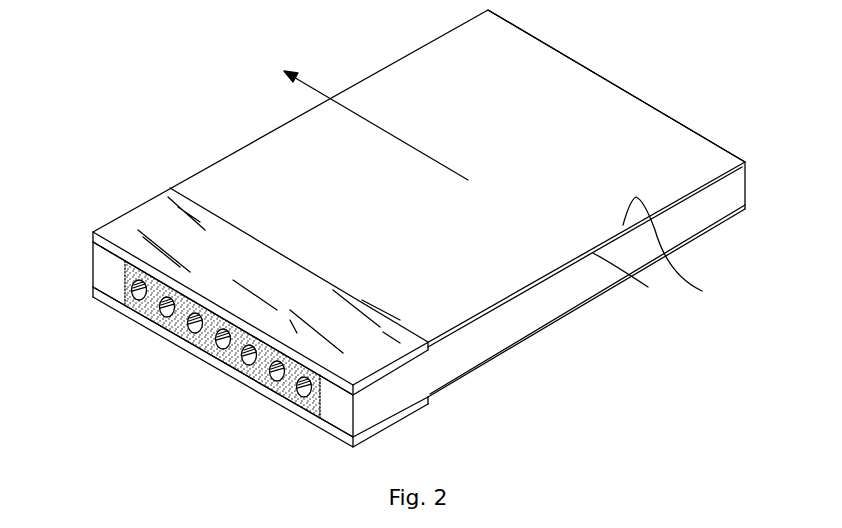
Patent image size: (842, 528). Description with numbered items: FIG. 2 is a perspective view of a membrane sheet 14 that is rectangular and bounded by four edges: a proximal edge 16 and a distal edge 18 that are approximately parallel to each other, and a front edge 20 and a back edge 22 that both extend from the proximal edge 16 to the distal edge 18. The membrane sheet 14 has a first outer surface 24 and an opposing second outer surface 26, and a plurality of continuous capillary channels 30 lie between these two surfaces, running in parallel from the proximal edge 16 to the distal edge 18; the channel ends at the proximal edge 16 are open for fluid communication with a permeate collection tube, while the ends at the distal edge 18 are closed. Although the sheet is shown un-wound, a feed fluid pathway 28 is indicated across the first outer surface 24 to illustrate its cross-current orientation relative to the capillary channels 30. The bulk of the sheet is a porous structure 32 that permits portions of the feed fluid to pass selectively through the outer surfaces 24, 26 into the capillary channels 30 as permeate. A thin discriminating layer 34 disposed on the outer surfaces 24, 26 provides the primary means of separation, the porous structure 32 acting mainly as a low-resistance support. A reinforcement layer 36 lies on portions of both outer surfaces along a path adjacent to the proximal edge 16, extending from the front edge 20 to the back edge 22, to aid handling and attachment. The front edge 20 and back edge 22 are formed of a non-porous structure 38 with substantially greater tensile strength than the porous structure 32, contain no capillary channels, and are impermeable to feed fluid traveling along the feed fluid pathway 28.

The membrane sheet 14 is at (212, 84).
The proximal edge 16 is at (145, 307).
The distal edge 18 is at (588, 67).
The front edge 20 is at (560, 298).
The back edge 22 is at (293, 121).
The first outer surface 24 is at (675, 249).
The second outer surface 26 is at (526, 341).
The feed fluid pathway 28 is at (317, 88).
The capillary channels 30 is at (190, 334).
The porous structure 32 is at (180, 317).
The discriminating layer 34 is at (746, 171).
The reinforcement layer 36 is at (108, 220).
The non-porous structure 38 is at (107, 278).